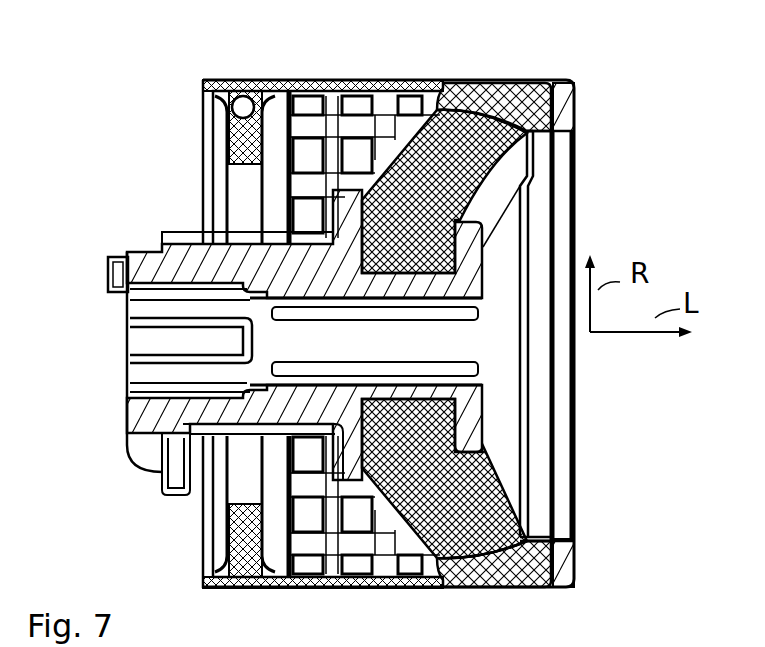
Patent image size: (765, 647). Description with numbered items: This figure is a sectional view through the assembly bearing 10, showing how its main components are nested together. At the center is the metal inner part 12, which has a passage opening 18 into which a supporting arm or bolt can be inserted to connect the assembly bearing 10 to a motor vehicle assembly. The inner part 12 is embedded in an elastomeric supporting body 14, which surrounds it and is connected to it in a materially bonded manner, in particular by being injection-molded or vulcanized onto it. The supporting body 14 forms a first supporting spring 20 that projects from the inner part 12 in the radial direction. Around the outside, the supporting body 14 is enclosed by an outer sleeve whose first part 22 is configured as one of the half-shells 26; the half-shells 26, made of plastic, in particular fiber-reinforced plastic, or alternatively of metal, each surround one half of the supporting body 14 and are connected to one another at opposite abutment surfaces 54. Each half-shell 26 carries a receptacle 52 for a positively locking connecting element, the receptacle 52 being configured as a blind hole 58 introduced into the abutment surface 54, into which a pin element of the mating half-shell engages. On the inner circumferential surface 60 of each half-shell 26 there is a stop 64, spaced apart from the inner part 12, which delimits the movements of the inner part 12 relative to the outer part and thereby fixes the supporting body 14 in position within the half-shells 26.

The assembly bearing 10 is at (606, 94).
The inner part 12 is at (182, 262).
The elastomeric supporting body 14 is at (527, 158).
The passage opening 18 is at (142, 335).
The first supporting spring 20 is at (480, 507).
The first part 22 is at (537, 90).
The half-shells 26 is at (538, 567).
The receptacle 52 is at (258, 84).
The abutment surfaces 54 is at (200, 81).
The blind hole 58 is at (245, 98).
The inner circumferential surface 60 is at (440, 92).
The stop 64 is at (362, 152).